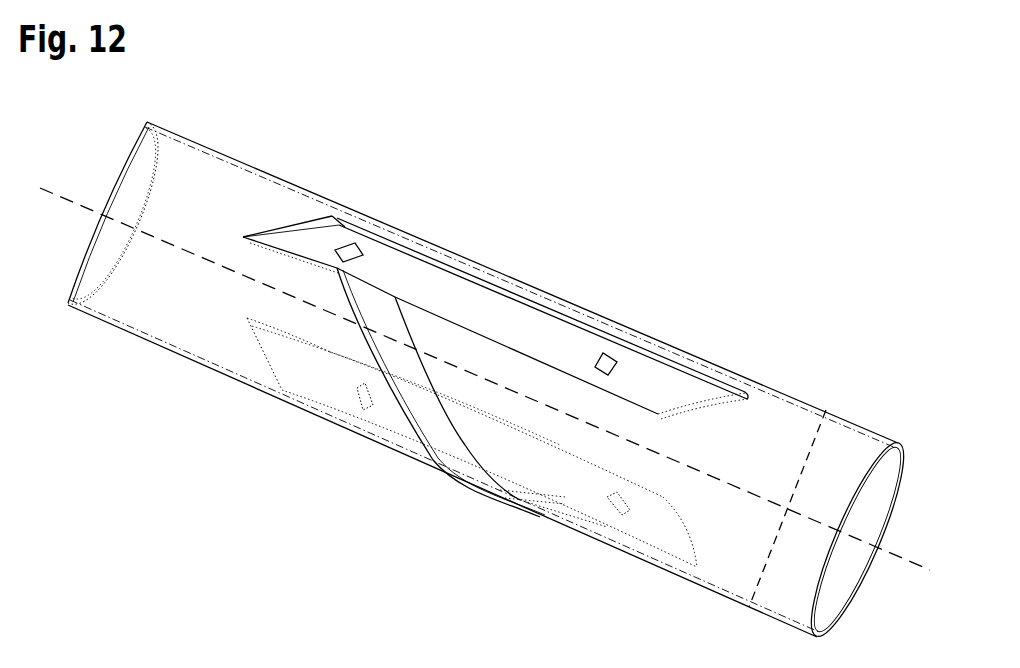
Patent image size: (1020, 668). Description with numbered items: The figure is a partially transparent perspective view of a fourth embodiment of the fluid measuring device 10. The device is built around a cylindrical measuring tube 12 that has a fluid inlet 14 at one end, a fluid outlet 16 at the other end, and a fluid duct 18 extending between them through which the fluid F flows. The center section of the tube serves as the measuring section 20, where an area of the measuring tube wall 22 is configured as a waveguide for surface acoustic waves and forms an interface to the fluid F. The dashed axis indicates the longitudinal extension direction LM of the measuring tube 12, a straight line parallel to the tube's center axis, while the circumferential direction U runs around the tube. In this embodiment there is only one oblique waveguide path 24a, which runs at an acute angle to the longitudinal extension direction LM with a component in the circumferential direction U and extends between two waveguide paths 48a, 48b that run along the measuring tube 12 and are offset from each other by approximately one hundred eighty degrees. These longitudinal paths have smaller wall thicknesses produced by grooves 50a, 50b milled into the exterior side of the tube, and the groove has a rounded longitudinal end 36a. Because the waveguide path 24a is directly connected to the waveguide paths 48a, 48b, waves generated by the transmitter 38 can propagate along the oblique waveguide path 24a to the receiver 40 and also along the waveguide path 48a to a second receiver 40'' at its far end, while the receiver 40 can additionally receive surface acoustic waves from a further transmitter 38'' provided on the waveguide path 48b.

The fluid measuring device 10 is at (797, 191).
The measuring tube 12 is at (772, 392).
The fluid inlet 14 is at (107, 192).
The fluid outlet 16 is at (884, 508).
The fluid duct 18 is at (206, 308).
The measuring section 20 is at (482, 256).
The measuring tube wall 22 is at (152, 349).
The first waveguide path 24a is at (377, 343).
The rounded longitudinal end 36a is at (345, 217).
The transmitter 38 is at (385, 216).
The further transmitter 38'' is at (324, 446).
The receiver 40 is at (566, 553).
The second receiver 40'' is at (648, 326).
The waveguide path 48a is at (513, 310).
The waveguide path 48b is at (397, 425).
The groove 50a is at (302, 225).
The groove 50b is at (262, 357).
The fluid F is at (768, 472).
The circumferential direction U is at (749, 613).
The longitudinal extension direction LM is at (930, 570).